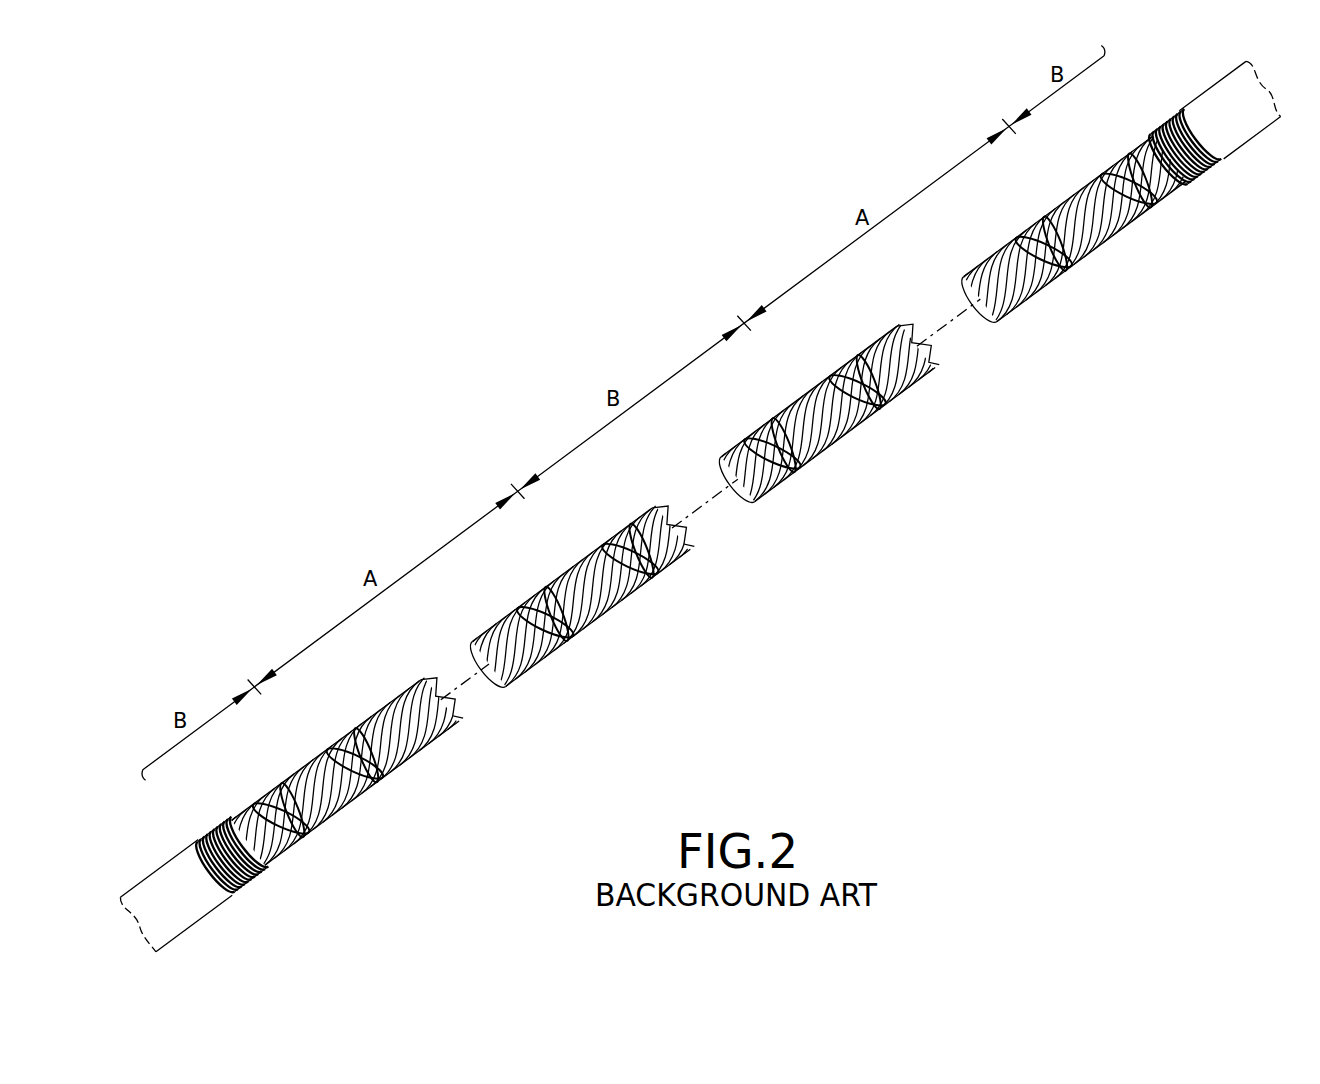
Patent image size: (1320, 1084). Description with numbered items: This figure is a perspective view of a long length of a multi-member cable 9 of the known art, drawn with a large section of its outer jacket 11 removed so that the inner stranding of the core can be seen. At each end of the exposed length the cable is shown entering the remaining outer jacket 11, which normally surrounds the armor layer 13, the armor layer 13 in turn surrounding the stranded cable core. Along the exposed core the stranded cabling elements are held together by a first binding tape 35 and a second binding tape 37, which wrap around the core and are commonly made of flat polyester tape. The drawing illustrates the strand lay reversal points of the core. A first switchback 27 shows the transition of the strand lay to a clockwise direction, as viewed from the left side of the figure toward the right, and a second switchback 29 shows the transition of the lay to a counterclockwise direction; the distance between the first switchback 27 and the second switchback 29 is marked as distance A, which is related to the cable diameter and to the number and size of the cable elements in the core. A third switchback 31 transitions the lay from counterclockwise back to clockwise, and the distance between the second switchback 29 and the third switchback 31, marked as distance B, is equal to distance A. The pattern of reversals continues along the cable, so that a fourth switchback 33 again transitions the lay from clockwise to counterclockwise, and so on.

The multi-member cable 9 is at (236, 917).
The outer jacket 11 is at (185, 912).
The armor layer 13 is at (250, 888).
The first switchback 27 is at (353, 815).
The second switchback 29 is at (617, 631).
The third switchback 31 is at (849, 457).
The fourth switchback 33 is at (1097, 262).
The first binding tape 35 is at (516, 613).
The second binding tape 37 is at (557, 587).